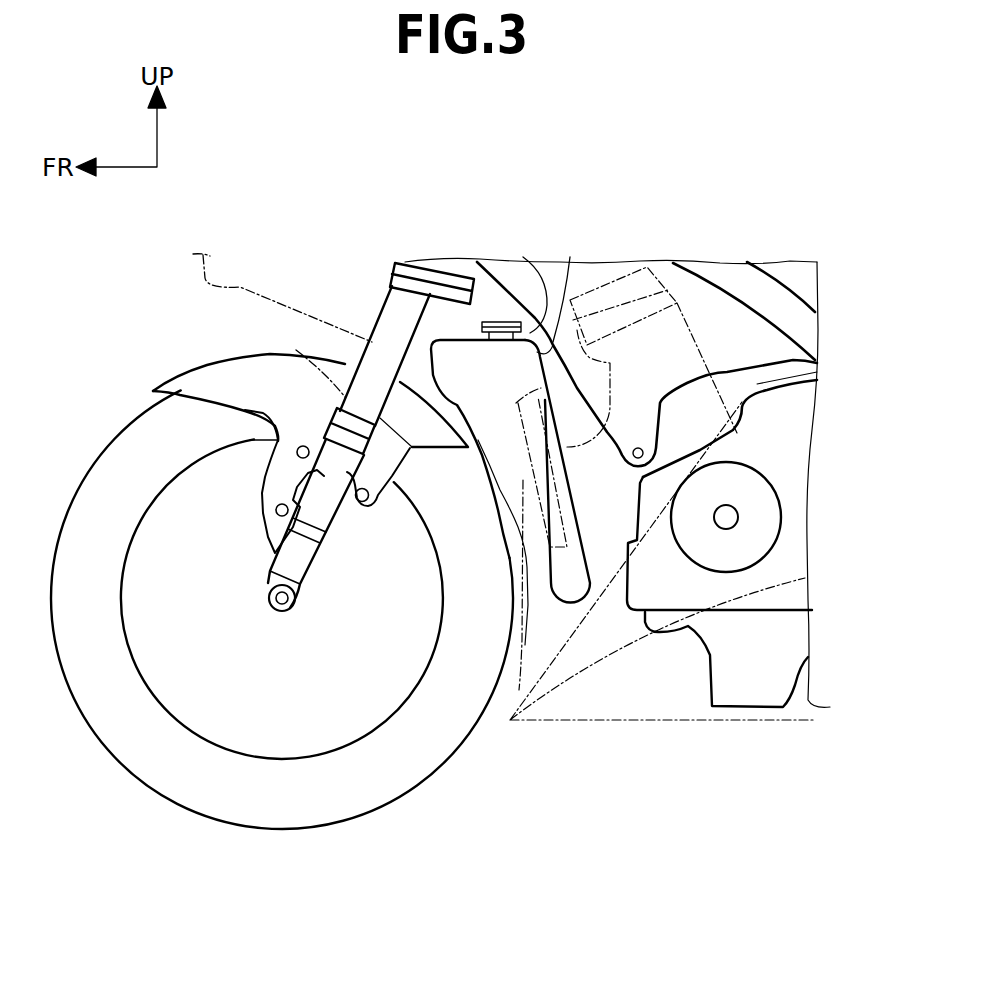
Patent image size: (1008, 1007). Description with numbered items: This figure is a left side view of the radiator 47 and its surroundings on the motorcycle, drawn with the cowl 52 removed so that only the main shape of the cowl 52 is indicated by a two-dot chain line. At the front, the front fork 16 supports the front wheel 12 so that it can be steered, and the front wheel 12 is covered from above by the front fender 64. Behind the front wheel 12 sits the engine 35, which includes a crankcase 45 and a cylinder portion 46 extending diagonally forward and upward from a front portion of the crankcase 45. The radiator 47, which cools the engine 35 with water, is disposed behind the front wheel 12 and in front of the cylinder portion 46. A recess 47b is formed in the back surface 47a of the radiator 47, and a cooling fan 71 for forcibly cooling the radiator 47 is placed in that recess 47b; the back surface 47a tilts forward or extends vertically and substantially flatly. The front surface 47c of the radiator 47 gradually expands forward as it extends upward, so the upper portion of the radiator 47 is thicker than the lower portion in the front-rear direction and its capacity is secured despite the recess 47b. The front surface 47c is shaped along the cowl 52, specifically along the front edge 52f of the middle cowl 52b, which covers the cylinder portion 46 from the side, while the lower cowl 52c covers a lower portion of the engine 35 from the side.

The front wheel 12 is at (130, 750).
The front fork 16 is at (390, 317).
The engine 35 is at (785, 435).
The crankcase 45 is at (787, 547).
The cylinder portion 46 is at (683, 328).
The radiator 47 is at (543, 338).
The back surface 47a is at (545, 325).
The recess 47b is at (555, 508).
The front surface 47c is at (530, 522).
The cowl 52 is at (238, 287).
The middle cowl 52b is at (352, 398).
The lower cowl 52c is at (690, 722).
The front edge 52f is at (517, 680).
The front fender 64 is at (197, 382).
The cooling fan 71 is at (618, 437).